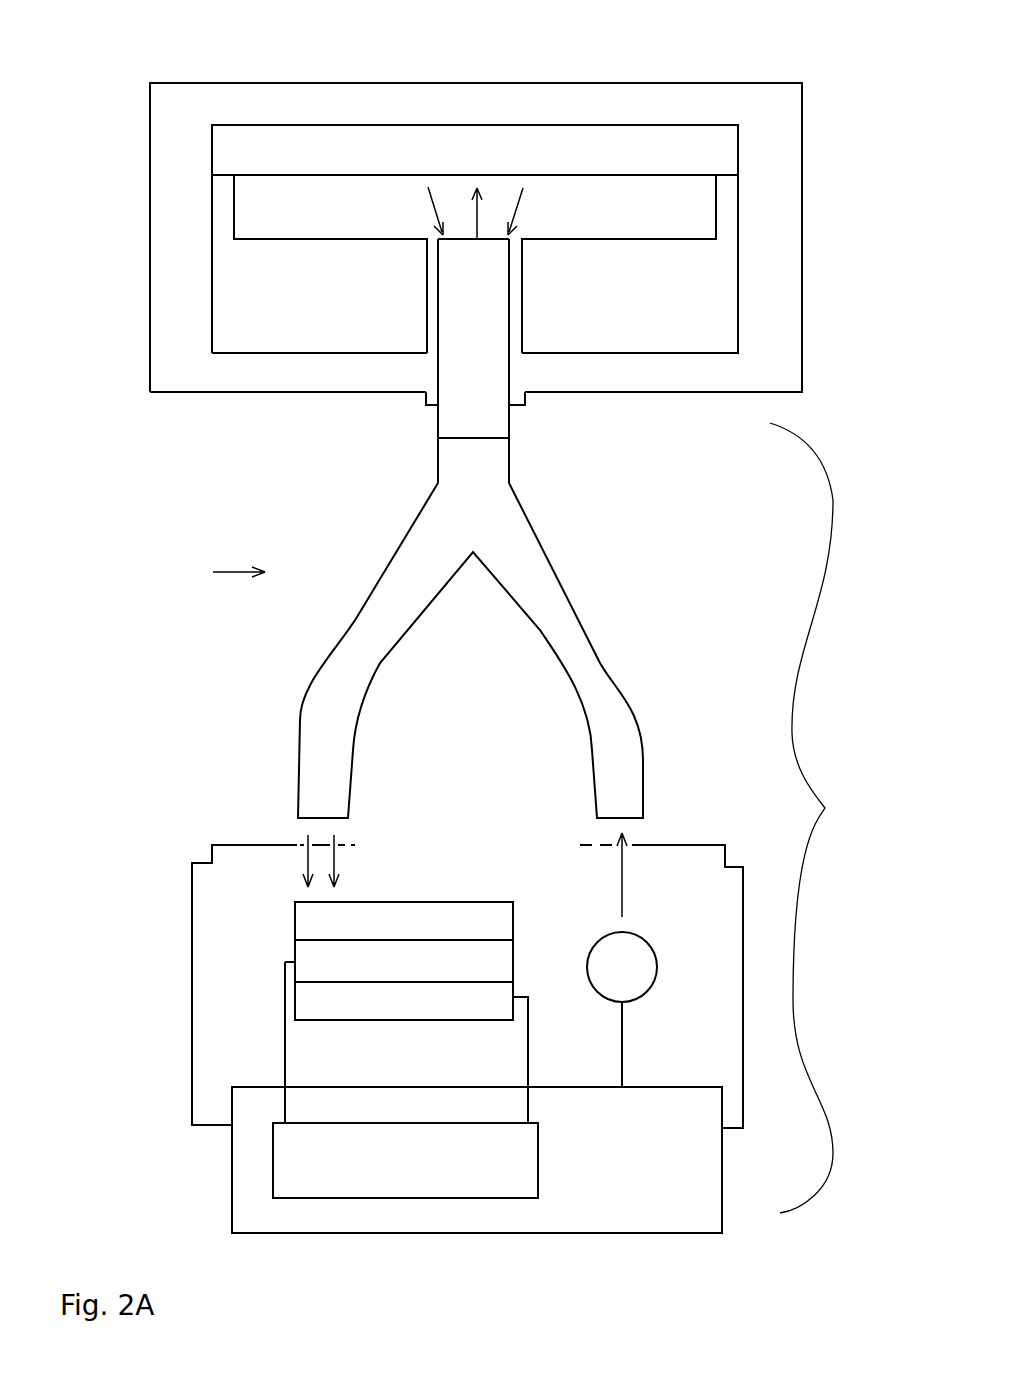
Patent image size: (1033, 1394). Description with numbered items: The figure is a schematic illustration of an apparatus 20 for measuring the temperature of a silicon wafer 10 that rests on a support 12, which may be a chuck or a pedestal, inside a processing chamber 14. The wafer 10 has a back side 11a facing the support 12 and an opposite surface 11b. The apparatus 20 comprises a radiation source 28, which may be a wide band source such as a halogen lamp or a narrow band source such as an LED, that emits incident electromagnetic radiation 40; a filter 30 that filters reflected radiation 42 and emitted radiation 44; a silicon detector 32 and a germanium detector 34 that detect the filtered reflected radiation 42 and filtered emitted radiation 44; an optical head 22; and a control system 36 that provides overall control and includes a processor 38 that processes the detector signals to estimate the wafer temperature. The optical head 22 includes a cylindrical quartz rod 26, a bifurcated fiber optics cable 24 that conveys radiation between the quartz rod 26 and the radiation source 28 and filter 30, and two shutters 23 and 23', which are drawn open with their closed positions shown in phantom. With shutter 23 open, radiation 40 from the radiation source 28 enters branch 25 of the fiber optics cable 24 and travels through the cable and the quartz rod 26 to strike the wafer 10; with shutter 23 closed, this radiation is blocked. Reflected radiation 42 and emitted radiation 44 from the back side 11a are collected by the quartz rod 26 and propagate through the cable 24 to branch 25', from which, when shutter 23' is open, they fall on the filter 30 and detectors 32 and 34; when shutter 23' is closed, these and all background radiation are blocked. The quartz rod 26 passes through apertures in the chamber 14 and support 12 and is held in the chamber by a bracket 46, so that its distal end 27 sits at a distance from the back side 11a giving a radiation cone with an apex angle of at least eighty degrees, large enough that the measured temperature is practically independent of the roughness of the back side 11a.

The silicon wafer 10 is at (303, 167).
The back side of wafer 11a is at (302, 177).
The upper surface of substrate 11b is at (340, 125).
The support 12 is at (269, 305).
The processing chamber 14 is at (693, 83).
The apparatus 20 is at (815, 818).
The optical head 22 is at (216, 573).
The shutter 23 is at (673, 960).
The shutter 23' is at (266, 963).
The bifurcated fiber optics cable 24 is at (474, 527).
The branch of fiber optics cable 25 is at (620, 801).
The branch of fiber optics cable 25' is at (323, 801).
The cylindrical quartz rod 26 is at (475, 357).
The distal end of quartz rod 27 is at (490, 239).
The radiation source 28 is at (657, 955).
The filter 30 is at (487, 934).
The silicon detector 32 is at (430, 977).
The germanium detector 34 is at (462, 1017).
The control system 36 is at (642, 1193).
The processor 38 is at (413, 1188).
The incident electromagnetic radiation 40 is at (622, 902).
The reflected radiation 42 is at (432, 212).
The emitted radiation 44 is at (522, 198).
The bracket 46 is at (432, 405).